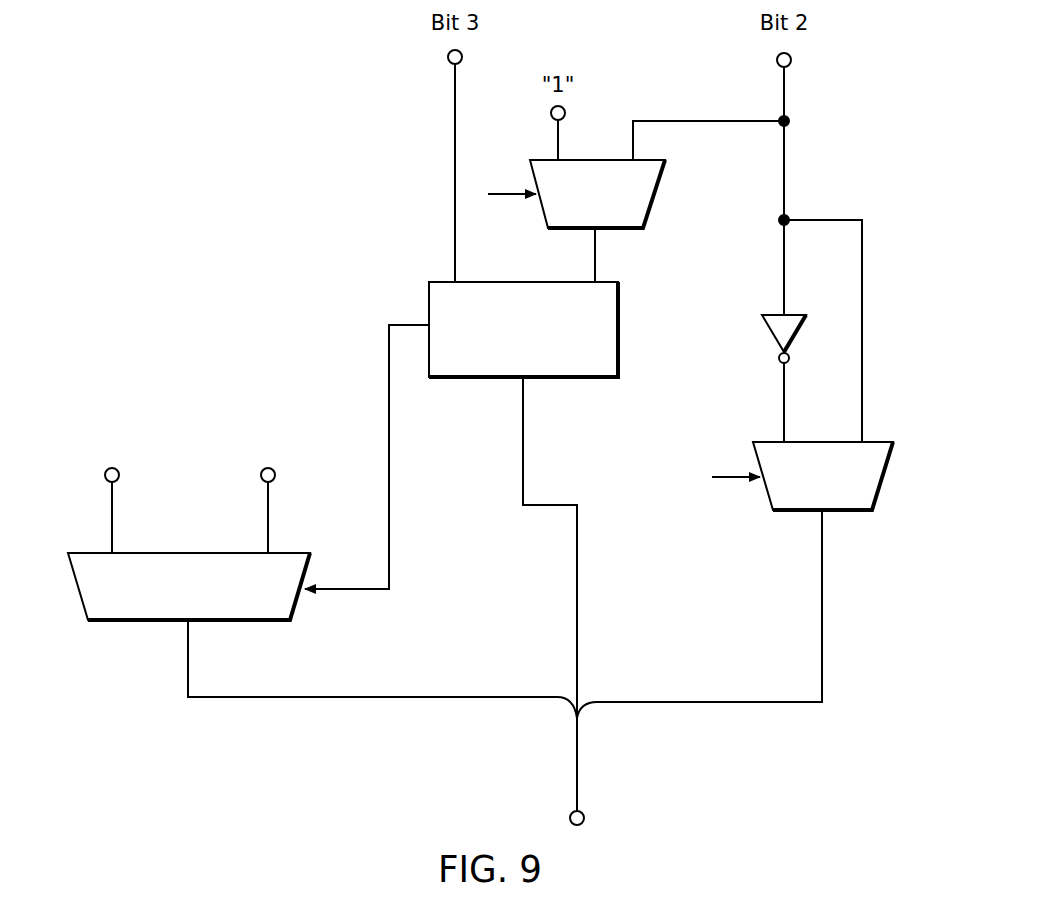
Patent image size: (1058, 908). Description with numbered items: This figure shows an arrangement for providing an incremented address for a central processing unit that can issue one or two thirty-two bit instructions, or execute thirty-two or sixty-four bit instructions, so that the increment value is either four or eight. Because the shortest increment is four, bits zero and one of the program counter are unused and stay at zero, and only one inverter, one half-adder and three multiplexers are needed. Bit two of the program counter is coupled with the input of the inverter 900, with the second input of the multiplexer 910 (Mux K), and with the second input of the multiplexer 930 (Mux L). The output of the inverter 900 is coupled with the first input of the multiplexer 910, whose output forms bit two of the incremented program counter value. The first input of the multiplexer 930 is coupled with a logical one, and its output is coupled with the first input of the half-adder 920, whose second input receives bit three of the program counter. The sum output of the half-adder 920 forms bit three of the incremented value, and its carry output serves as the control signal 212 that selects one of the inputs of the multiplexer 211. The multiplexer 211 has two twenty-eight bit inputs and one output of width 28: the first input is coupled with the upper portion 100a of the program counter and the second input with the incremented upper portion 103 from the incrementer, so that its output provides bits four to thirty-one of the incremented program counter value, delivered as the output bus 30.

The multiplexer 930 is at (655, 197).
The multiplexer 910 is at (880, 490).
The inverter 900 is at (771, 334).
The half-adder 920 is at (566, 378).
The control signal 212 is at (389, 535).
The multiplexer 211 is at (247, 622).
The 28-bit input/output width 28 is at (199, 645).
The output bus 30 is at (588, 758).
The upper portion of program counter 100a is at (104, 472).
The incremented upper portion 103 is at (275, 470).